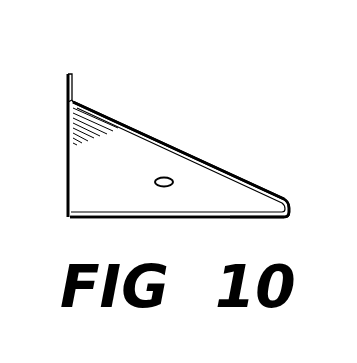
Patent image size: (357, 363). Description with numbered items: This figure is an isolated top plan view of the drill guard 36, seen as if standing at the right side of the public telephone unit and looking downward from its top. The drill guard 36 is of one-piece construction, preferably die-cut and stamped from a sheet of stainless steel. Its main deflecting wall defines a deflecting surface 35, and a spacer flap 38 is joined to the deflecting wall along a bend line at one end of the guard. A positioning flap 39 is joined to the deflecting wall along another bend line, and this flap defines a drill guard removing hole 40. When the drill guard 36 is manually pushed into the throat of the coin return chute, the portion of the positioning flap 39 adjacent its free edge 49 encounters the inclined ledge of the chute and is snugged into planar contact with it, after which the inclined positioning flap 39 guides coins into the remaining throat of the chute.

The deflecting surface 35 is at (162, 138).
The drill guard 36 is at (203, 118).
The spacer flap 38 is at (73, 101).
The positioning flap 39 is at (237, 200).
The drill guard removing hole 40 is at (67, 108).
The free edge 49 is at (157, 223).